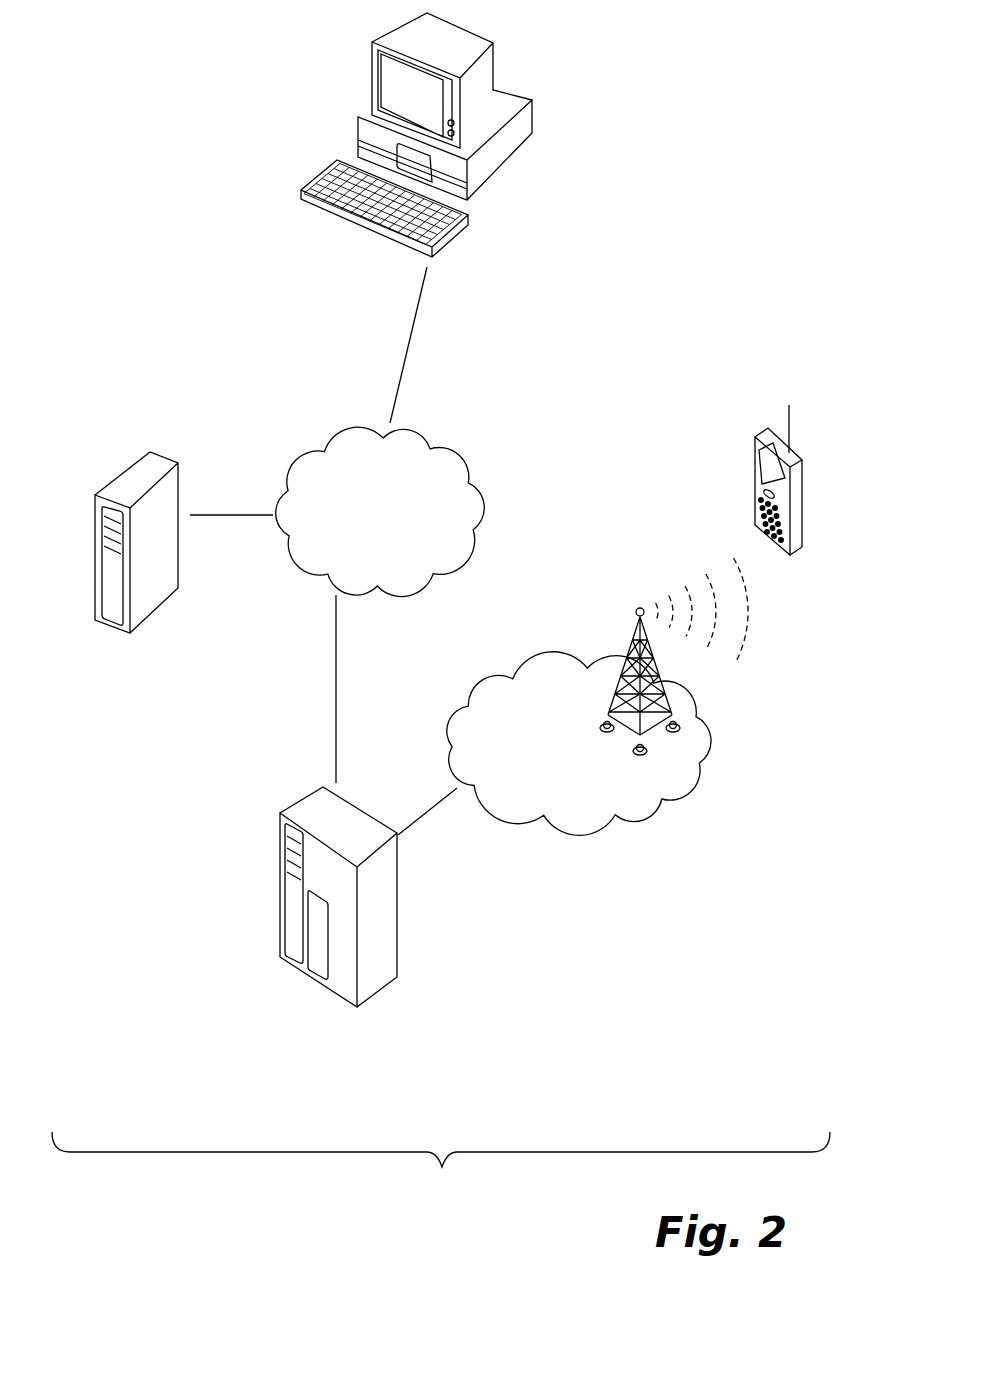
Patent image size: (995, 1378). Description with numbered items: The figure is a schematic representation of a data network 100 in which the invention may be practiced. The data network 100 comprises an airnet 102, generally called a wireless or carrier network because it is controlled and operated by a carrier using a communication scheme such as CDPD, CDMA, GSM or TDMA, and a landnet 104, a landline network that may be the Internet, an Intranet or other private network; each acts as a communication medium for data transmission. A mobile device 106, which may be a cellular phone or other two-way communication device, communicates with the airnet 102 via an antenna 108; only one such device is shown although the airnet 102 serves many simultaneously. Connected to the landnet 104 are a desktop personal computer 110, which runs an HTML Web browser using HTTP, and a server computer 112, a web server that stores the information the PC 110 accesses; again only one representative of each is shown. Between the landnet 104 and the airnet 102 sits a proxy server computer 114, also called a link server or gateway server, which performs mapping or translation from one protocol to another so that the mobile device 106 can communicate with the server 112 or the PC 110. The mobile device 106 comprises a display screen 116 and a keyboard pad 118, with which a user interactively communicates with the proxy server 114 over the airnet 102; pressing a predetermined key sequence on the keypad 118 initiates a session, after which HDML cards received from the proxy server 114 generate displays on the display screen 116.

The data network 100 is at (441, 1165).
The airnet 102 is at (710, 753).
The landnet 104 is at (355, 438).
The mobile device 106 is at (717, 488).
The antenna 108 is at (635, 622).
The desktop personal computer 110 is at (507, 162).
The server computer 112 is at (123, 477).
The proxy server computer 114 is at (277, 907).
The display screen 116 is at (802, 458).
The keyboard pad 118 is at (780, 550).